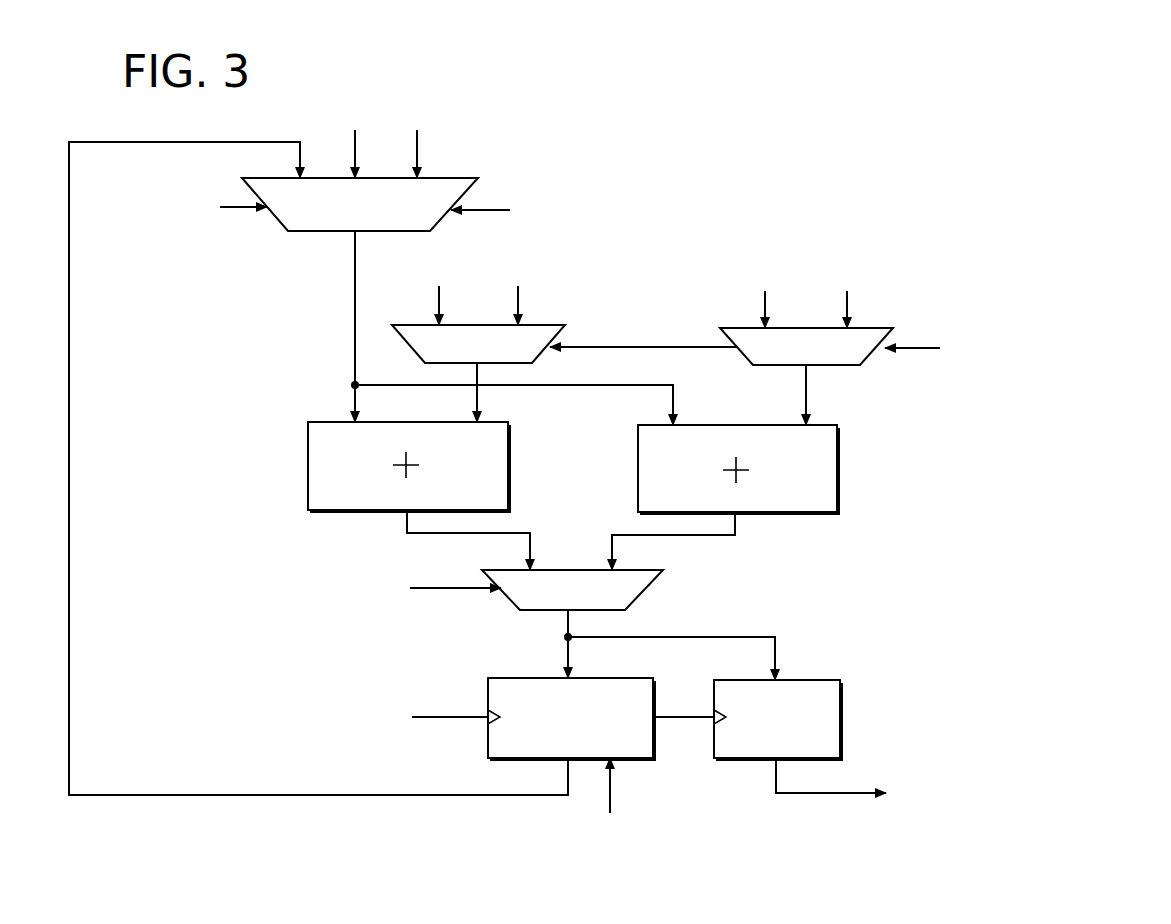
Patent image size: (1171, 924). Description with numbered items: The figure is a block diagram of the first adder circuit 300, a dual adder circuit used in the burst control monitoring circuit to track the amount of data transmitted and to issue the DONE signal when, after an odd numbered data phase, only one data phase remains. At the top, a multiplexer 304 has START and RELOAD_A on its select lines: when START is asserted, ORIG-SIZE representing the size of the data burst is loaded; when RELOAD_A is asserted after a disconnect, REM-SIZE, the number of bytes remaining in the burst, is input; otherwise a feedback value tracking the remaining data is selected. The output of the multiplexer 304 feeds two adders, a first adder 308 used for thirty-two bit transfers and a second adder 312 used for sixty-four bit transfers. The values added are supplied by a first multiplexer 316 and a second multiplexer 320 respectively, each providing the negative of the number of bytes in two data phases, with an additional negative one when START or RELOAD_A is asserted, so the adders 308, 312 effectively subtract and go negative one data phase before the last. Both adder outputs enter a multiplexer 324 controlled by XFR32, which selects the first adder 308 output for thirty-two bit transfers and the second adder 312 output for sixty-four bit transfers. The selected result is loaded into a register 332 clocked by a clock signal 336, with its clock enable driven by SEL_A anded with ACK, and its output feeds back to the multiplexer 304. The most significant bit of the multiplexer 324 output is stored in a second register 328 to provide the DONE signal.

The first adder circuit 300 is at (838, 173).
The multiplexer 304 is at (477, 181).
The first adder 308 is at (505, 423).
The second adder 312 is at (832, 426).
The first multiplexer 316 is at (548, 325).
The second multiplexer 320 is at (877, 329).
The multiplexer 324 is at (655, 571).
The second register 328 is at (822, 681).
The register 332 is at (610, 678).
The clock signal 336 is at (440, 717).